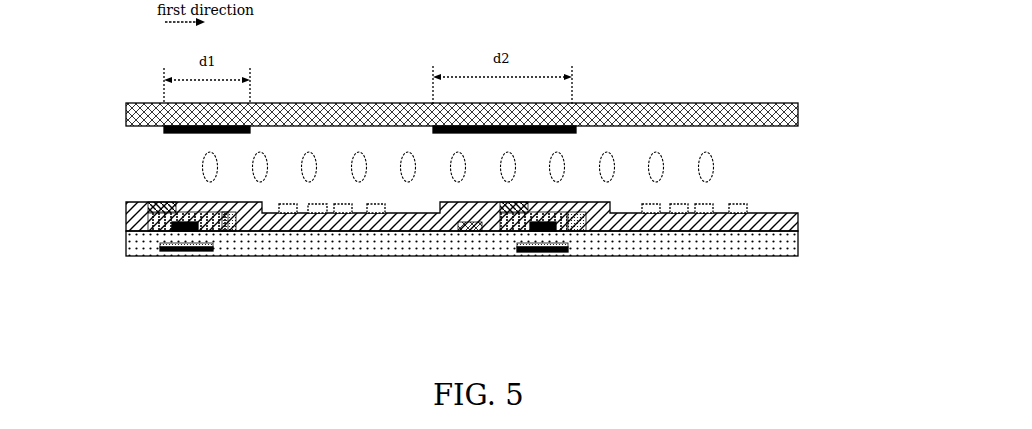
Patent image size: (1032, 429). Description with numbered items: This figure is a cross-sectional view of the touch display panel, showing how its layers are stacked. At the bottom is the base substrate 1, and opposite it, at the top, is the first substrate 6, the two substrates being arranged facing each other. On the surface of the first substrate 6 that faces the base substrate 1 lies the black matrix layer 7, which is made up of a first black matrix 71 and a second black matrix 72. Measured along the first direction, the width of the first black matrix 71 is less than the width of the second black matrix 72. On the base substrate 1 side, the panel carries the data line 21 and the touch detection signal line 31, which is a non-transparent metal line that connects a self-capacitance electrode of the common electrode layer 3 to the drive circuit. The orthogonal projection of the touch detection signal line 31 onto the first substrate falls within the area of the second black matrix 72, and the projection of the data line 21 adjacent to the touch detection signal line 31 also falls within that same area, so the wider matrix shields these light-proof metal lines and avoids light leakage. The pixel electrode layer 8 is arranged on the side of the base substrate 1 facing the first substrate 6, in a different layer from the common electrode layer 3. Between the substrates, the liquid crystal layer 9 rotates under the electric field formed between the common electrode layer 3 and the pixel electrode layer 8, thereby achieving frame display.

The base substrate 1 is at (472, 240).
The common electrode layer 3 is at (748, 207).
The first substrate 6 is at (798, 113).
The black matrix layer 7 is at (370, 75).
The first black matrix 71 is at (232, 126).
The second black matrix 72 is at (462, 122).
The pixel electrode layer 8 is at (798, 231).
The liquid crystal layer 9 is at (716, 165).
The data line 21 is at (406, 242).
The touch detection signal line 31 is at (470, 231).